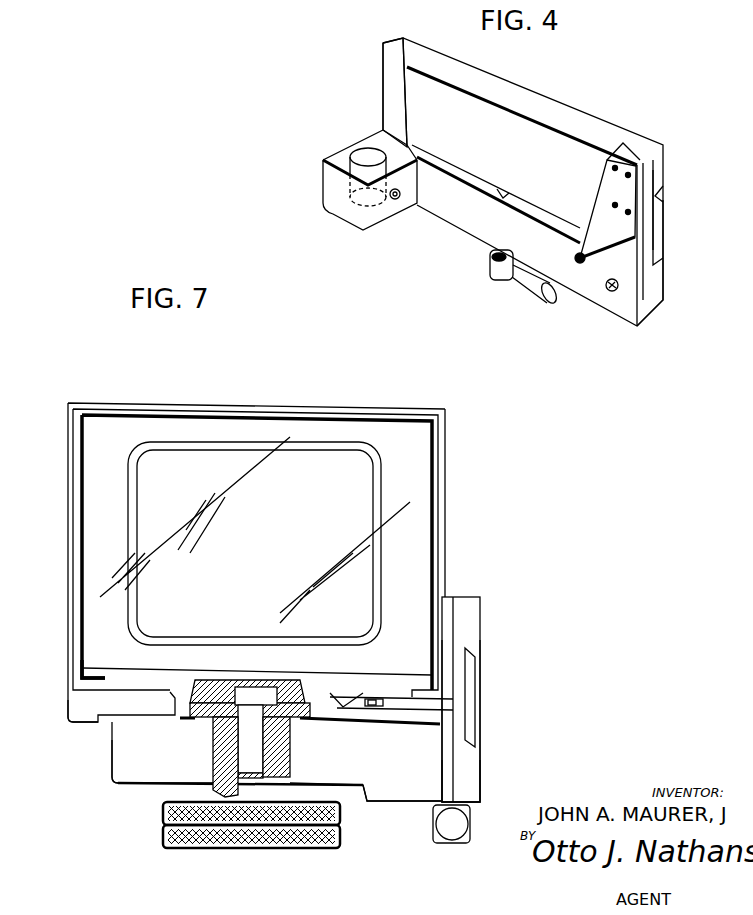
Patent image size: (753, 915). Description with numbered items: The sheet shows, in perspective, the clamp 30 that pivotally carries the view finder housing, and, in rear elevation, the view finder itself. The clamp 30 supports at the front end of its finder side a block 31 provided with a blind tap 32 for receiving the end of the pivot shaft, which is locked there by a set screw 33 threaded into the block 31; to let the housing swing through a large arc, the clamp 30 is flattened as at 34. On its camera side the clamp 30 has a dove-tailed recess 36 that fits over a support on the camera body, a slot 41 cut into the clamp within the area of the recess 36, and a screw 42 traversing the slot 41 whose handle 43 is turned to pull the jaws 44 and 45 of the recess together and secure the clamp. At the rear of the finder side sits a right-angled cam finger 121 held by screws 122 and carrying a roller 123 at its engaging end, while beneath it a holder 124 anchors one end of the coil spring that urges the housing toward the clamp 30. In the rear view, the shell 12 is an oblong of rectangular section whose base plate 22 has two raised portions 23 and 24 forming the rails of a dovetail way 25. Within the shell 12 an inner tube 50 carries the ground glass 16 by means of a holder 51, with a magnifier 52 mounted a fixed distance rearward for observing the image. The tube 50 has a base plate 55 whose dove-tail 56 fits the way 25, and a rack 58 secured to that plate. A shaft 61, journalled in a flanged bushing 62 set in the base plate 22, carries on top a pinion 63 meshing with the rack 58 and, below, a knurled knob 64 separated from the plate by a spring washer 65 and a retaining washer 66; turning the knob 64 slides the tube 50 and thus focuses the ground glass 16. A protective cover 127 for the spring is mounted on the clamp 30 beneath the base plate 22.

In FIG. 7, the shell 12 is at (445, 498).
In FIG. 7, the ground glass 16 is at (237, 452).
In FIG. 7, the base plate 22 is at (102, 723).
In FIG. 7, the raised portion 23 is at (345, 700).
In FIG. 7, the raised portion 24 is at (158, 697).
In FIG. 7, the dovetail way 25 is at (168, 700).
In FIG. 4, the clamp 30 is at (573, 103).
In FIG. 7, the clamp 30 is at (480, 672).
In FIG. 4, the block 31 is at (322, 180).
In FIG. 7, the block 31 is at (372, 802).
In FIG. 4, the blind tap 32 is at (364, 152).
In FIG. 4, the set screw 33 is at (392, 200).
In FIG. 4, the flattened portion 34 is at (392, 73).
In FIG. 4, the dove-tailed recess 36 is at (657, 223).
In FIG. 7, the dove-tailed recess 36 is at (470, 712).
In FIG. 4, the slot 41 is at (552, 222).
In FIG. 4, the screw 42 is at (500, 197).
In FIG. 4, the handle 43 is at (523, 287).
In FIG. 7, the handle 43 is at (433, 835).
In FIG. 4, the jaw 44 is at (663, 170).
In FIG. 7, the jaw 44 is at (480, 630).
In FIG. 4, the jaw 45 is at (662, 288).
In FIG. 7, the jaw 45 is at (478, 777).
In FIG. 7, the inner tube 50 is at (437, 557).
In FIG. 7, the holder 51 is at (177, 440).
In FIG. 7, the magnifier 52 is at (335, 535).
In FIG. 7, the base plate 55 is at (80, 672).
In FIG. 7, the dove-tail 56 is at (340, 730).
In FIG. 7, the rack 58 is at (217, 678).
In FIG. 7, the shaft 61 is at (215, 753).
In FIG. 7, the flanged bushing 62 is at (240, 655).
In FIG. 7, the pinion 63 is at (258, 682).
In FIG. 7, the knurled knob 64 is at (220, 848).
In FIG. 7, the spring washer 65 is at (287, 730).
In FIG. 7, the retaining washer 66 is at (293, 727).
In FIG. 4, the cam finger 121 is at (625, 262).
In FIG. 7, the cam finger 121 is at (395, 693).
In FIG. 4, the screws 122 is at (615, 170).
In FIG. 4, the roller 123 is at (580, 263).
In FIG. 7, the roller 123 is at (372, 697).
In FIG. 4, the holder 124 is at (614, 292).
In FIG. 7, the protective cover 127 is at (112, 780).